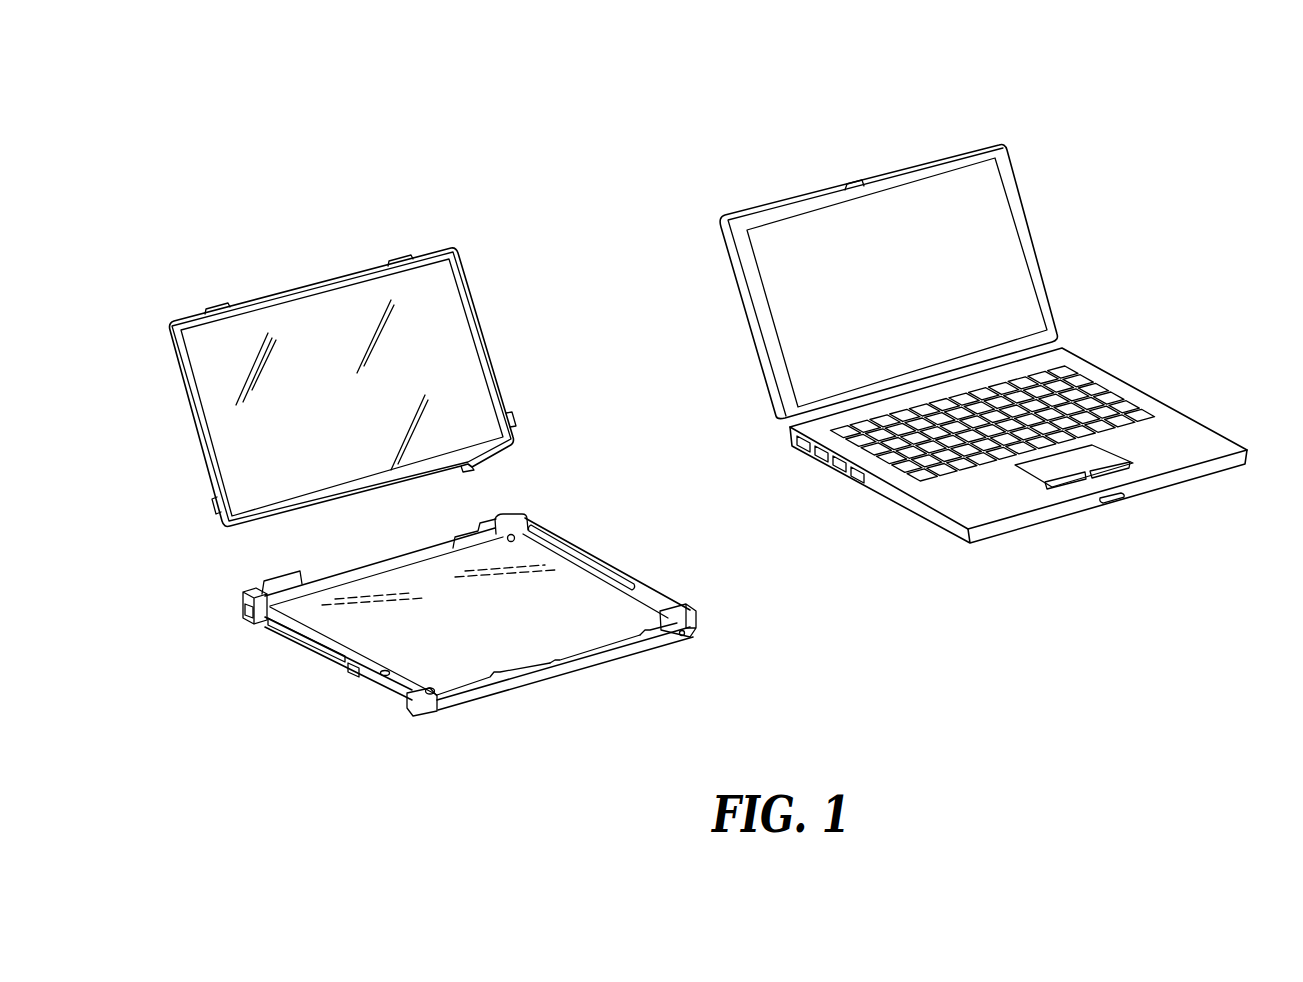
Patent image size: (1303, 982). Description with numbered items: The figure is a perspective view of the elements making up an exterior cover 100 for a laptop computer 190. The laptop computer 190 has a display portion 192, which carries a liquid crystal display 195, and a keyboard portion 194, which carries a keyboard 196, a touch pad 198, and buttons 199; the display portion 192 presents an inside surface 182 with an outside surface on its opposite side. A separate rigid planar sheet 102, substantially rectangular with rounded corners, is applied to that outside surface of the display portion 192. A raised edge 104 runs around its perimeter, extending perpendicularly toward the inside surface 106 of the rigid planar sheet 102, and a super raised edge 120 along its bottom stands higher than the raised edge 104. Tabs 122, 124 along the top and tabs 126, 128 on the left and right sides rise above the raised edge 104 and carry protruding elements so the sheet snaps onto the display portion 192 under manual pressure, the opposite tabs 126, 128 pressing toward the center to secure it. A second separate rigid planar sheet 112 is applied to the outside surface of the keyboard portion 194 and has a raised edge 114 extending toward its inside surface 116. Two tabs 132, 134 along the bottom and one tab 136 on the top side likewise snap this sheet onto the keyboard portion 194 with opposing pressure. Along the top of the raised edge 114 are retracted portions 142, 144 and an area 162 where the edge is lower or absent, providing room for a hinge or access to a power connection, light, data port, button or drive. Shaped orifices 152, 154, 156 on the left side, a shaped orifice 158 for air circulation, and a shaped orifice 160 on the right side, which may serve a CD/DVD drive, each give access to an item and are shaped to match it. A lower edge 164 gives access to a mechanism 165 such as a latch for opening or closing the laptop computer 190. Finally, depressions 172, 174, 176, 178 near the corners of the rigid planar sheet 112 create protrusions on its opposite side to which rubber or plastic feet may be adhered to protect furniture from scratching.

The exterior cover 100 is at (107, 296).
The rigid planar sheet 102 is at (352, 262).
The raised edge 104 is at (455, 250).
The inside surface 106 is at (432, 304).
The rigid planar sheet 112 is at (480, 705).
The raised edge 114 is at (655, 592).
The inside surface 116 is at (600, 637).
The super raised edge 120 is at (472, 470).
The tab 122 is at (222, 312).
The tab 124 is at (405, 260).
The tab 126 is at (216, 506).
The tab 128 is at (515, 420).
The tab 132 is at (493, 672).
The tab 134 is at (633, 633).
The tab 136 is at (377, 560).
The retracted portion 142 is at (268, 578).
The retracted portion 144 is at (485, 525).
The shaped orifice 152 is at (248, 614).
The shaped orifice 154 is at (695, 630).
The shaped orifice 156 is at (350, 673).
The shaped orifice 158 is at (387, 670).
The shaped orifice 160 is at (572, 557).
The area 162 is at (313, 576).
The lower edge 164 is at (573, 657).
The mechanism 165 is at (853, 180).
The depression 172 is at (258, 590).
The depression 174 is at (432, 687).
The depression 176 is at (683, 606).
The depression 178 is at (512, 524).
The inside surface 182 is at (1010, 233).
The laptop computer 190 is at (732, 168).
The display portion 192 is at (973, 128).
The keyboard portion 194 is at (1130, 385).
The liquid crystal display 195 is at (1003, 175).
The keyboard 196 is at (1108, 455).
The touch pad 198 is at (1130, 466).
The buttons 199 is at (1133, 473).